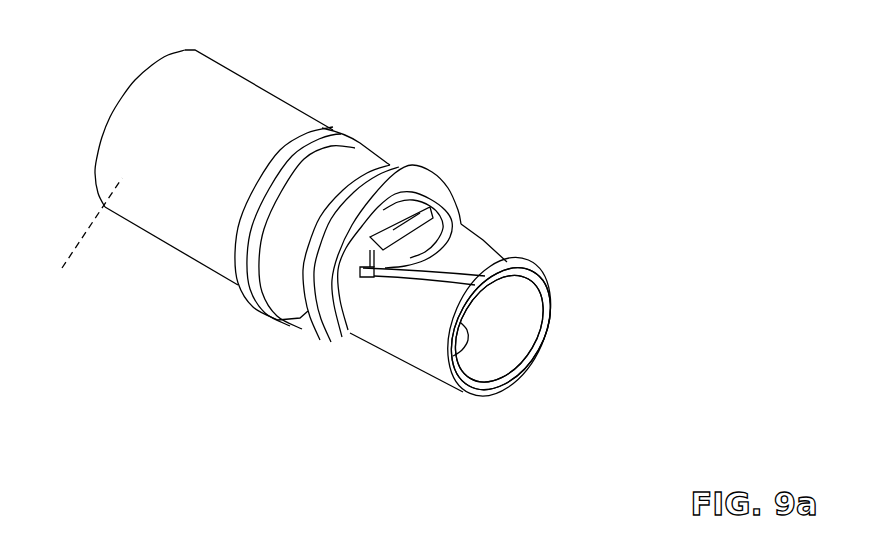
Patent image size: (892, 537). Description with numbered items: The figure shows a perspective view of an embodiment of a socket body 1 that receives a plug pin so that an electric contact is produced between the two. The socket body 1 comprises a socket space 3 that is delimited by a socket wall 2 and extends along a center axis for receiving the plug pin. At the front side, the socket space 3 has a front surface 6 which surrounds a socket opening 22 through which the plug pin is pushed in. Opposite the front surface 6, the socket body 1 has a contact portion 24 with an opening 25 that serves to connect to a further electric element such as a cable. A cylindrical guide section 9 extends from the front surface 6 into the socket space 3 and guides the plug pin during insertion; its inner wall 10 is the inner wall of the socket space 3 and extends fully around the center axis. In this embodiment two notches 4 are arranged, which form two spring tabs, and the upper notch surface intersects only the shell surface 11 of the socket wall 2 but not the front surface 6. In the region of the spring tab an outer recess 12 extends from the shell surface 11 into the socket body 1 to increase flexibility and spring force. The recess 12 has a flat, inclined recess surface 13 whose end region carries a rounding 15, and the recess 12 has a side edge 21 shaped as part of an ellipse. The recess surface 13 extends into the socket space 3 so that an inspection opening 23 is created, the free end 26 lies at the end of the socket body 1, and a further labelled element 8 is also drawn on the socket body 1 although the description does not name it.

The socket body 1 is at (385, 162).
The socket wall 2 is at (427, 358).
The socket space 3 is at (520, 327).
The notch 4 is at (450, 187).
The front surface 6 is at (518, 368).
The stop tab 8 is at (412, 273).
The guide section 9 is at (515, 308).
The inner wall 10 is at (508, 327).
The shell surface 11 is at (405, 348).
The outer recess 12 is at (462, 249).
The recess surface 13 is at (476, 240).
The rounding 15 is at (393, 240).
The side edge 21 is at (502, 245).
The socket opening 22 is at (522, 347).
The inspection opening 23 is at (440, 205).
The contact portion 24 is at (266, 120).
The opening 25 is at (74, 238).
The free end 26 is at (535, 272).